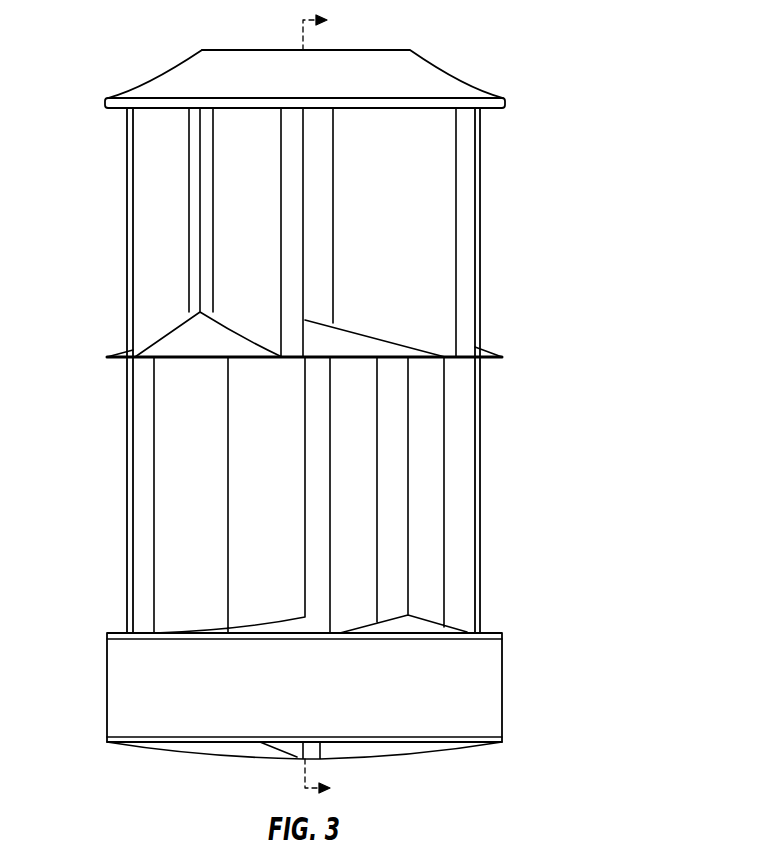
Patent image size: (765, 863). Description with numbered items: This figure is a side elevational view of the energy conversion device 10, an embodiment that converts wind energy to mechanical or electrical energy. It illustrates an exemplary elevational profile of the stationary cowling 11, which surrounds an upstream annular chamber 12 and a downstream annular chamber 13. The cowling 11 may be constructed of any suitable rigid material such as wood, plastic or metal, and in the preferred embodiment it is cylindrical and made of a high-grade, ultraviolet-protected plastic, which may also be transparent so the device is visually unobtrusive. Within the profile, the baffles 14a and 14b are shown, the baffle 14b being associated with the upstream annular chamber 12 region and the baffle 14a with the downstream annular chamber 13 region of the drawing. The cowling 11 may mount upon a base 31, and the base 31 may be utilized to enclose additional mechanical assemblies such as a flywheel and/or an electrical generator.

The energy conversion device 10 is at (324, 407).
The stationary cowling 11 is at (447, 73).
The upstream annular chamber 12 is at (425, 553).
The downstream annular chamber 13 is at (177, 293).
The baffle 14a is at (308, 497).
The baffle 14b is at (468, 248).
The base 31 is at (490, 705).